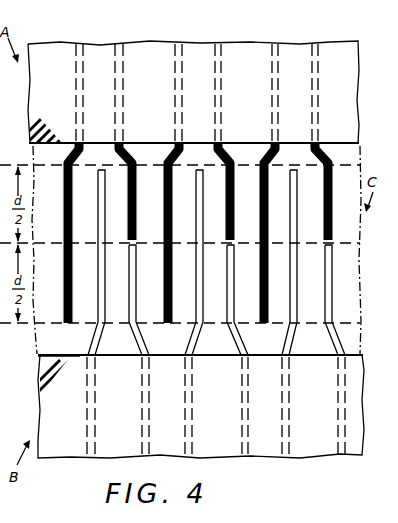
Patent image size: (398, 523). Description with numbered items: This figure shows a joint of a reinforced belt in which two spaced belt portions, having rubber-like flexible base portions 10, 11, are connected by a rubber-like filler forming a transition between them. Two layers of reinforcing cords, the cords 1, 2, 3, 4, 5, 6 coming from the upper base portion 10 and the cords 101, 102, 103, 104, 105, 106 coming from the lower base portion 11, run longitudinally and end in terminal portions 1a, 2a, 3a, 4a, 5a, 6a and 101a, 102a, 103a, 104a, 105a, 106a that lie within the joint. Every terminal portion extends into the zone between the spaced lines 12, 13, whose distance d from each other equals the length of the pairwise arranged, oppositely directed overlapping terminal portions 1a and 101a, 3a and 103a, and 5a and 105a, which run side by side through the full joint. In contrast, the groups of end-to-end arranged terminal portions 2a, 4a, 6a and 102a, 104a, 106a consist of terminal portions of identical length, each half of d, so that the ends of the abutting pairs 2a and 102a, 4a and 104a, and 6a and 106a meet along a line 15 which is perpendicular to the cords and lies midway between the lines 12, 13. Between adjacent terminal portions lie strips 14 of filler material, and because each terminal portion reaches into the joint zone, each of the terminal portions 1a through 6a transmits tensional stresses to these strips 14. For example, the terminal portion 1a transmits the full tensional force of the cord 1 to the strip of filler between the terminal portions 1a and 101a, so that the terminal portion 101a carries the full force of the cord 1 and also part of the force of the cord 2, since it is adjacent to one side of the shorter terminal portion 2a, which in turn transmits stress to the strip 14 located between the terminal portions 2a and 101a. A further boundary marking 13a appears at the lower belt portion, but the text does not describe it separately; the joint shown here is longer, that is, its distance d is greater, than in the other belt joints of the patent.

The base portion 10 is at (46, 42).
The base portion 11 is at (62, 452).
The line 12 is at (0, 339).
The line 13 is at (9, 150).
The boundary line 13a is at (40, 374).
The strip of filler material 14 is at (88, 223).
The line 15 is at (38, 247).
The reinforcing cord 1 is at (76, 73).
The reinforcing cord 2 is at (117, 77).
The reinforcing cord 3 is at (176, 81).
The reinforcing cord 4 is at (217, 87).
The reinforcing cord 5 is at (273, 88).
The reinforcing cord 6 is at (313, 88).
The terminal portion 1a is at (63, 201).
The terminal portion 2a is at (137, 178).
The terminal portion 3a is at (173, 178).
The terminal portion 4a is at (235, 178).
The terminal portion 5a is at (269, 180).
The terminal portion 6a is at (333, 178).
The reinforcing cord 101 is at (88, 408).
The reinforcing cord 102 is at (142, 423).
The reinforcing cord 103 is at (186, 407).
The reinforcing cord 104 is at (242, 400).
The reinforcing cord 105 is at (283, 385).
The reinforcing cord 106 is at (339, 413).
The terminal portion 101a is at (95, 312).
The terminal portion 102a is at (129, 309).
The terminal portion 103a is at (192, 310).
The terminal portion 104a is at (227, 310).
The terminal portion 105a is at (289, 308).
The terminal portion 106a is at (328, 308).